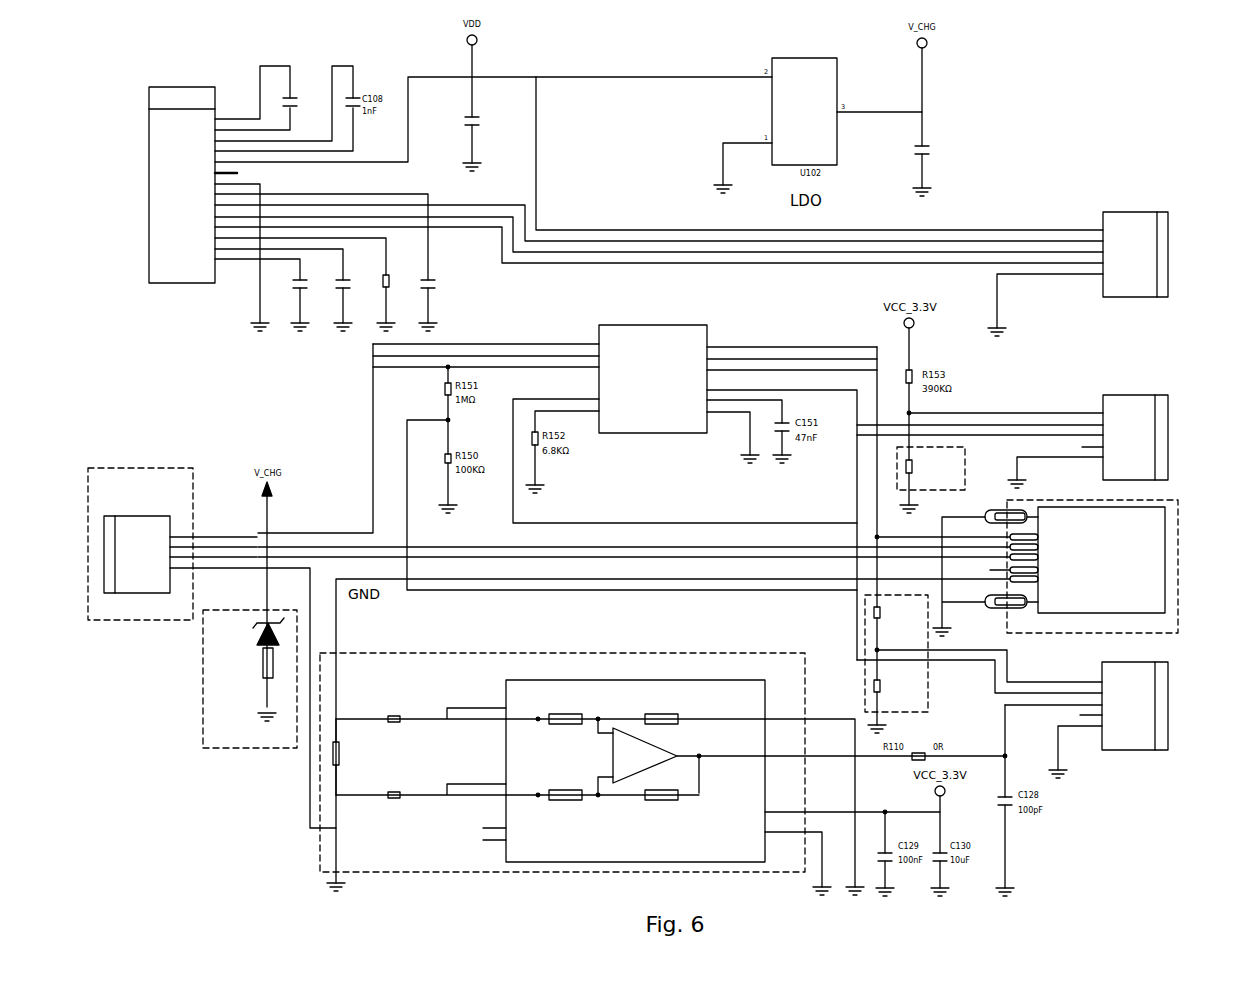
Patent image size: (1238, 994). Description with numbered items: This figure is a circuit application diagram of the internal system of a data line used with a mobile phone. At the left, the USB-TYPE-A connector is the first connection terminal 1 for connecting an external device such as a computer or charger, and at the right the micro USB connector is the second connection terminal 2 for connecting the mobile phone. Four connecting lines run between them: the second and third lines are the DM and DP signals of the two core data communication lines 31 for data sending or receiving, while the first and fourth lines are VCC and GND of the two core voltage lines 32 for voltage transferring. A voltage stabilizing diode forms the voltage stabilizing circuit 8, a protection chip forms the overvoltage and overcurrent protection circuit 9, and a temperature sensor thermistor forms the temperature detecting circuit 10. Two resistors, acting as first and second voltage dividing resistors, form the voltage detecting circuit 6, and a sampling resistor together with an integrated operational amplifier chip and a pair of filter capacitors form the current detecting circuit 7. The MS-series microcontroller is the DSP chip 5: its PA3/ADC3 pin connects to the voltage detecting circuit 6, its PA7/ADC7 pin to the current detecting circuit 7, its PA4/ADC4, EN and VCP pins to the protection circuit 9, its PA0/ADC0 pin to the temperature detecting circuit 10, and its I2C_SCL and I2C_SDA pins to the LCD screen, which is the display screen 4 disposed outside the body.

The first connection terminal 1 is at (143, 468).
The second connection terminal 2 is at (1155, 535).
The display screen 4 is at (150, 470).
The DSP chip 5 is at (1140, 262).
The voltage detecting circuit 6 is at (864, 638).
The current detecting circuit 7 is at (522, 652).
The voltage stabilizing circuit 8 is at (258, 748).
The overvoltage and overcurrent protection circuit 9 is at (655, 345).
The temperature detecting circuit 10 is at (965, 472).
The core data communication lines 31 is at (515, 547).
The core voltage lines 32 is at (372, 496).